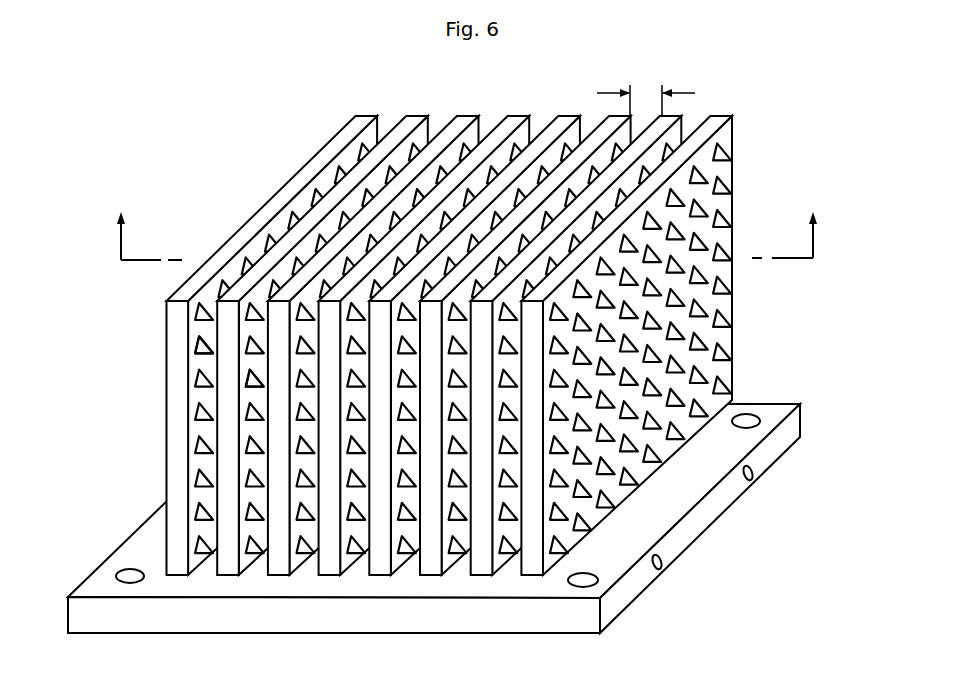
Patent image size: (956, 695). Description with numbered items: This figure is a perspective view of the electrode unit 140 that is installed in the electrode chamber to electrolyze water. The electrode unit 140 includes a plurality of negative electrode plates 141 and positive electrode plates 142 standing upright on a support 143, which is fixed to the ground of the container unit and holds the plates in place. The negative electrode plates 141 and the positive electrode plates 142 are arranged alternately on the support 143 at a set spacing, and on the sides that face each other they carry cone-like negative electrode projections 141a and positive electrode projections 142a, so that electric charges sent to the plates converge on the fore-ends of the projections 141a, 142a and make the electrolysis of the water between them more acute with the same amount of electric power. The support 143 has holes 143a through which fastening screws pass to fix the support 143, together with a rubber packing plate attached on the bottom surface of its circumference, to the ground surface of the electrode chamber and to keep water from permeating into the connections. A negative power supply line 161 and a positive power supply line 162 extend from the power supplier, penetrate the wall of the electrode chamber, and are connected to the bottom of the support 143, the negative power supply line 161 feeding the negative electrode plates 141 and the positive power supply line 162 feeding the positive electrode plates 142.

The electrode unit 140 is at (152, 134).
The negative electrode plate 141 is at (176, 577).
The positive electrode plate 142 is at (226, 577).
The negative electrode projection 141a is at (204, 347).
The positive electrode projection 142a is at (253, 380).
The support 143 is at (778, 411).
The hole 143a is at (596, 573).
The negative power supply line 161 is at (814, 470).
The positive power supply line 162 is at (661, 562).